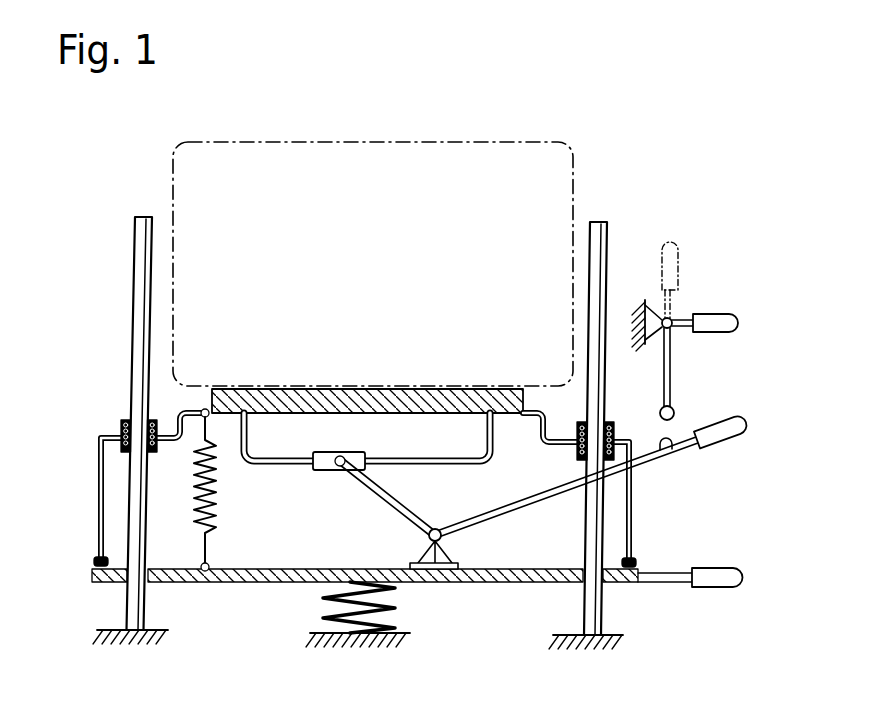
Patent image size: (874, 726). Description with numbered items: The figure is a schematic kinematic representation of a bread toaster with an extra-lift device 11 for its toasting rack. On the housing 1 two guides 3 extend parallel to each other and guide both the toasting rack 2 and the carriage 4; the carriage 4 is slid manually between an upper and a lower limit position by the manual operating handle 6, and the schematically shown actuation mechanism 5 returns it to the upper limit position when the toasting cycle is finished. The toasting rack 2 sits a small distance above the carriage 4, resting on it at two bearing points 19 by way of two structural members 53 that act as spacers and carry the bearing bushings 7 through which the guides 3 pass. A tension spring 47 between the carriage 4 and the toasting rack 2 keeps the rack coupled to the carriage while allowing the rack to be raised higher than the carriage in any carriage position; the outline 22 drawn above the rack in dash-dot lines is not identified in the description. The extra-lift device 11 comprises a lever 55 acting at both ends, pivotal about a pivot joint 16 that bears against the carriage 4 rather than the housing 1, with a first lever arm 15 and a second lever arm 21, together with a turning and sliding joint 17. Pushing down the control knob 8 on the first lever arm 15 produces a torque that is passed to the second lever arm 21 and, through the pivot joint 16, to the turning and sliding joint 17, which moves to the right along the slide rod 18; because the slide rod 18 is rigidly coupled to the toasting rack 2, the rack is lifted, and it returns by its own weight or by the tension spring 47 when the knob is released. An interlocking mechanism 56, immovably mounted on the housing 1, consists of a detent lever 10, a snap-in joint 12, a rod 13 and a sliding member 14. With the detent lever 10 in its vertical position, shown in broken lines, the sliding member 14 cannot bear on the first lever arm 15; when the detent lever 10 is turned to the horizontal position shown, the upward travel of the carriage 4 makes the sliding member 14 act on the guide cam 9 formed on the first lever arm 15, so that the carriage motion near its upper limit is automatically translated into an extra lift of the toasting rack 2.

The housing 1 is at (128, 645).
The toasting rack 2 is at (272, 390).
The guides 3 is at (140, 237).
The carriage 4 is at (218, 583).
The actuation mechanism 5 is at (330, 606).
The manual operating handle 6 is at (718, 590).
The bearing bushings 7 is at (124, 428).
The control knob 8 is at (724, 448).
The guide cam 9 is at (666, 455).
The detent lever 10 is at (742, 323).
The extra-lift device 11 is at (451, 518).
The snap-in joint 12 is at (674, 318).
The rod 13 is at (674, 367).
The sliding member 14 is at (676, 410).
The first lever arm 15 is at (512, 513).
The pivot joint 16 is at (437, 545).
The turning and sliding joint 17 is at (325, 460).
The slide rod 18 is at (403, 458).
The bearing points 19 is at (95, 558).
The second lever arm 21 is at (397, 511).
The seat / load 22 is at (483, 150).
The tension spring 47 is at (214, 510).
The structural members 53 is at (98, 515).
The lever 55 is at (477, 560).
The interlocking mechanism 56 is at (700, 307).